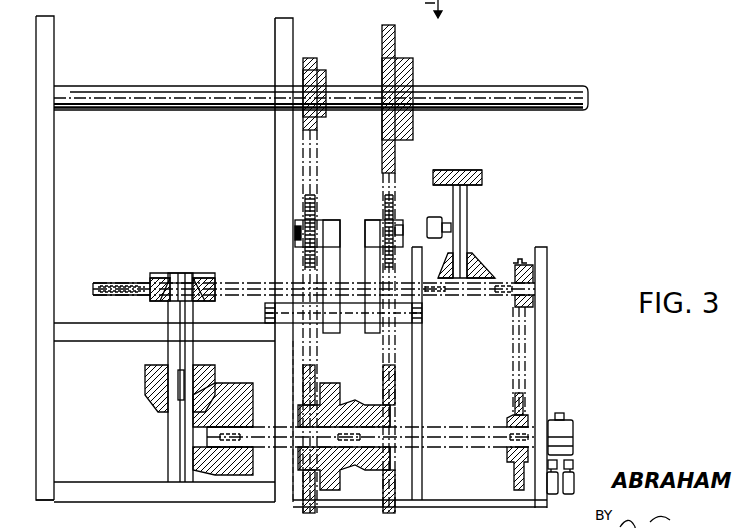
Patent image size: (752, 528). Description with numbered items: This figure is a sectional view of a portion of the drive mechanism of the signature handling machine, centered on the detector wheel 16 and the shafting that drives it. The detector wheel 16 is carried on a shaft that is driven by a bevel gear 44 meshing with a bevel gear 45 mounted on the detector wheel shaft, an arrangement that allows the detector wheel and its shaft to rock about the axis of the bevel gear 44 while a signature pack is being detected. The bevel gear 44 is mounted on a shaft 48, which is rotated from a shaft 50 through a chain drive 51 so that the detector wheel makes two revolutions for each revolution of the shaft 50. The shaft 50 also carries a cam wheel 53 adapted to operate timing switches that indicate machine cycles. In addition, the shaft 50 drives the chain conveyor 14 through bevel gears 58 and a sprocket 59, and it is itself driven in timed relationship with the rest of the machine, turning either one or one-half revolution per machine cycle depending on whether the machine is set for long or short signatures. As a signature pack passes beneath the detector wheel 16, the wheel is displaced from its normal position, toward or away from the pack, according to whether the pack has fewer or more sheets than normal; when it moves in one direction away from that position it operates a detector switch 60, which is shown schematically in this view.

The chain conveyor 14 is at (272, 276).
The detector wheel 16 is at (484, 178).
The bevel gear 44 is at (502, 273).
The bevel gear 45 is at (472, 258).
The shaft 48 is at (443, 297).
The shaft 50 is at (475, 427).
The chain drive 51 is at (512, 352).
The cam wheel 53 is at (573, 424).
The bevel gears 58 is at (250, 411).
The sprocket 59 is at (120, 285).
The detector switch 60 is at (434, 216).